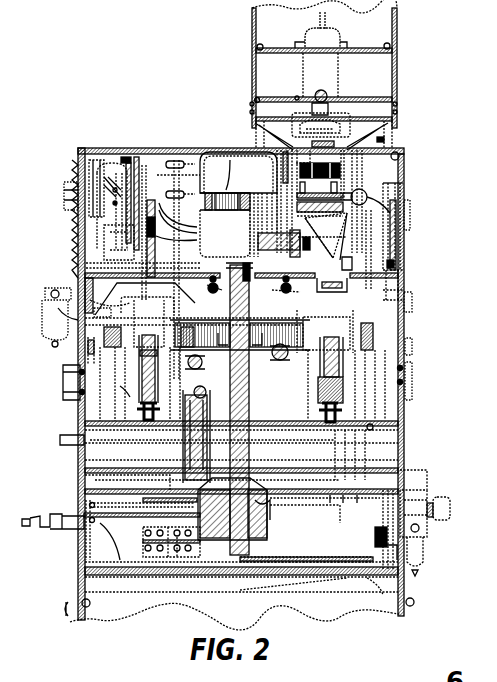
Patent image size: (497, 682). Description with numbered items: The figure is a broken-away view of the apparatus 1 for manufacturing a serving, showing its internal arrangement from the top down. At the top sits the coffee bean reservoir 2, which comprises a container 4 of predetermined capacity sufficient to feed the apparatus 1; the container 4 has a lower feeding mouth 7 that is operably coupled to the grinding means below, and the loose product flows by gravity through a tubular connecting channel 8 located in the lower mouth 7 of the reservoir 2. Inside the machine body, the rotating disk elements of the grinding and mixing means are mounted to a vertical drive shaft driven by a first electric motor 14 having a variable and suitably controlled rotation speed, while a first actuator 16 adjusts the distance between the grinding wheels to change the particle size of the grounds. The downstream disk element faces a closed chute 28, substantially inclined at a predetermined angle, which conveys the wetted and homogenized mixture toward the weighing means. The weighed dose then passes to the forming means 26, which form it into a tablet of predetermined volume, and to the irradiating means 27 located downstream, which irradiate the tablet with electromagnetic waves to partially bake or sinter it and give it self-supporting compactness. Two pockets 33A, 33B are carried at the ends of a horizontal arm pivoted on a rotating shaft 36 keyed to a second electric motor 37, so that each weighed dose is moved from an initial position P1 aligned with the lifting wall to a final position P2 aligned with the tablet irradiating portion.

The apparatus 1 is at (170, 120).
The coffee bean reservoir 2 is at (252, 42).
The container 4 is at (378, 29).
The lower feeding mouth 7 is at (380, 130).
The tubular connecting channel 8 is at (400, 158).
The first electric motor 14 is at (230, 150).
The first actuator 16 is at (396, 208).
The forming means 26 is at (78, 280).
The irradiating means 27 is at (135, 148).
The closed chute 28 is at (410, 242).
The pocket 33A is at (375, 348).
The pocket 33B is at (100, 347).
The rotating shaft 36 is at (246, 405).
The second electric motor 37 is at (270, 542).
The initial position P1 is at (350, 400).
The final position P2 is at (128, 397).